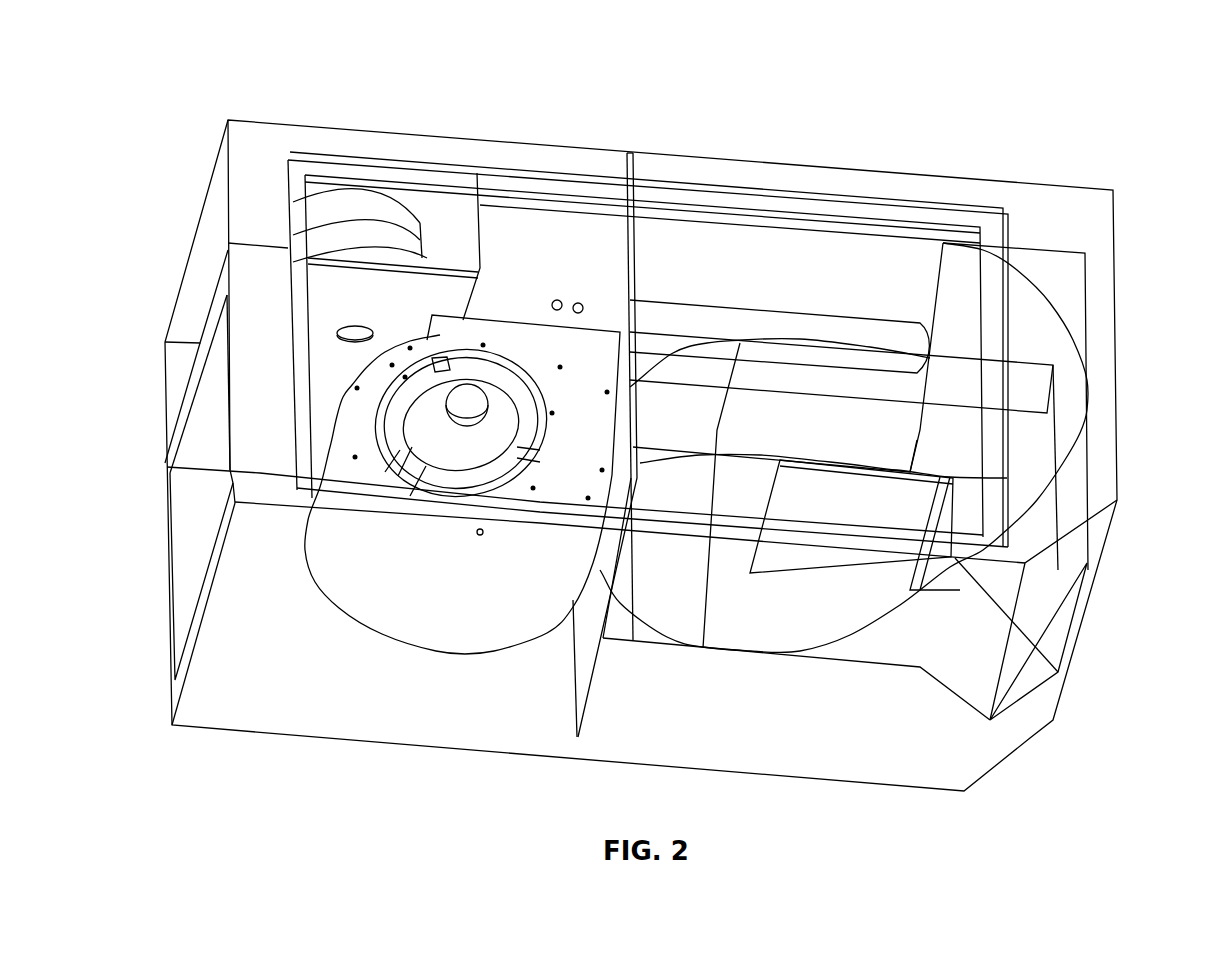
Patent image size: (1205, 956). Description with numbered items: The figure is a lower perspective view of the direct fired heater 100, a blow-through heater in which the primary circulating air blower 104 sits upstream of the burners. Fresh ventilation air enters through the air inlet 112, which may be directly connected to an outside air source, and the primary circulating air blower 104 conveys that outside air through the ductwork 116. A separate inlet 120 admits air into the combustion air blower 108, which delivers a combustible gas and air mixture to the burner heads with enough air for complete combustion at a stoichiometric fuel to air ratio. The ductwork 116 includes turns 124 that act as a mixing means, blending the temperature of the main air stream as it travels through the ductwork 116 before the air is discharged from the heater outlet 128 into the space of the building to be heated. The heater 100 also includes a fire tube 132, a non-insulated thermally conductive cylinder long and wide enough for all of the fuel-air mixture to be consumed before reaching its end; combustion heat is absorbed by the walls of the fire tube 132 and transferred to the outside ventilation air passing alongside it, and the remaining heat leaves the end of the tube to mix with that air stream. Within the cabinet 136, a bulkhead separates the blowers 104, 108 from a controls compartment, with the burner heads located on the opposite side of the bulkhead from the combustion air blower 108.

The direct fired heater 100 is at (192, 76).
The primary circulating air blower 104 is at (458, 625).
The combustion air blower 108 is at (352, 200).
The air inlet 112 is at (193, 512).
The ductwork 116 is at (837, 257).
The inlet 120 is at (370, 337).
The turns or bends 124 is at (1015, 500).
The heater outlet 128 is at (1075, 647).
The fire tube 132 is at (697, 320).
The cabinet 136 is at (984, 180).